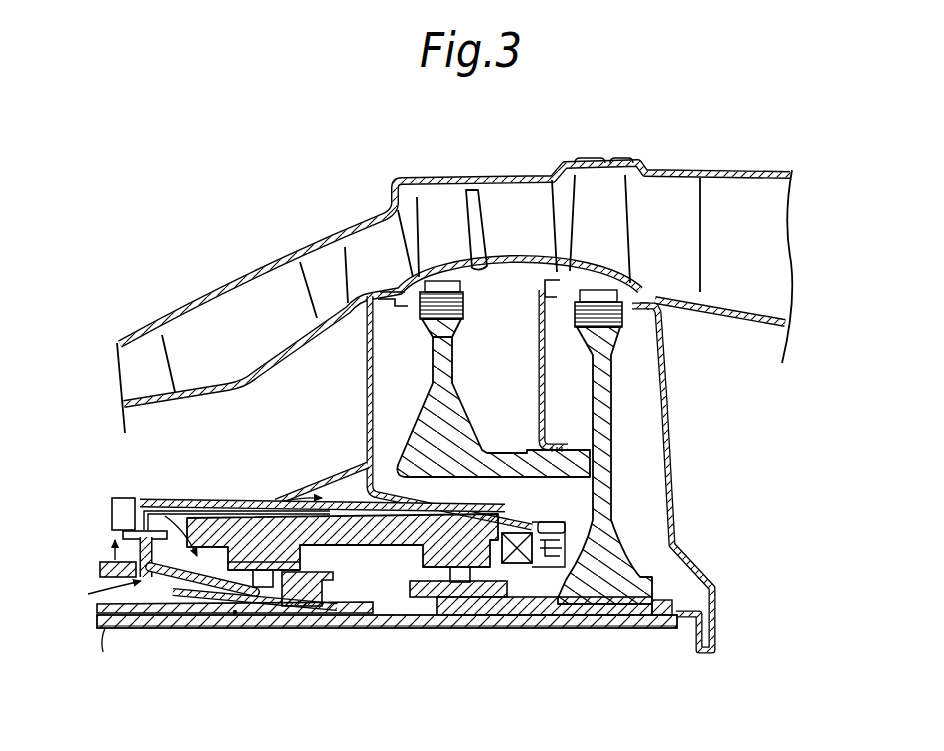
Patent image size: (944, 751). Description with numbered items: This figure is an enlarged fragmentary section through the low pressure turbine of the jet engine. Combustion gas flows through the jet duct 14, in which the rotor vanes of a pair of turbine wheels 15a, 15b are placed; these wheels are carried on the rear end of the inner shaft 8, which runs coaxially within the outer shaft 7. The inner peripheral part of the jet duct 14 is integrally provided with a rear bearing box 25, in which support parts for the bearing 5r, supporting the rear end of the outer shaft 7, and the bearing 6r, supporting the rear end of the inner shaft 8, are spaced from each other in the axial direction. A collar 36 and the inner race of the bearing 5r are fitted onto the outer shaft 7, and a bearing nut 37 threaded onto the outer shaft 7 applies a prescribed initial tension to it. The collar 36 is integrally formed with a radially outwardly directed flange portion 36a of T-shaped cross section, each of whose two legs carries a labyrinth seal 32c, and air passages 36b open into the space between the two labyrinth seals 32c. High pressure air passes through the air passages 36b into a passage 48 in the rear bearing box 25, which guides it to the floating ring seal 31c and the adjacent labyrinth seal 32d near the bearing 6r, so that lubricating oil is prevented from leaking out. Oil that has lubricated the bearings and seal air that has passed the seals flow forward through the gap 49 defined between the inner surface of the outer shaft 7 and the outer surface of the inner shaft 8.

The jet duct 14 is at (756, 253).
The turbine wheel 15a is at (463, 227).
The turbine wheel 15b is at (613, 213).
The rear bearing box 25 is at (340, 500).
The labyrinth seal 32c is at (112, 528).
The passage 48 is at (228, 517).
The collar 36 is at (103, 572).
The flange portion 36a is at (160, 578).
The air passages 36b is at (148, 580).
The bearing nut 37 is at (290, 606).
The floating ring seal 31c is at (515, 532).
The bearing 5r is at (263, 588).
The bearing 6r is at (460, 583).
The outer shaft 7 is at (363, 602).
The gap 49 is at (235, 614).
The inner shaft 8 is at (366, 628).
The labyrinth seal 32d is at (593, 614).